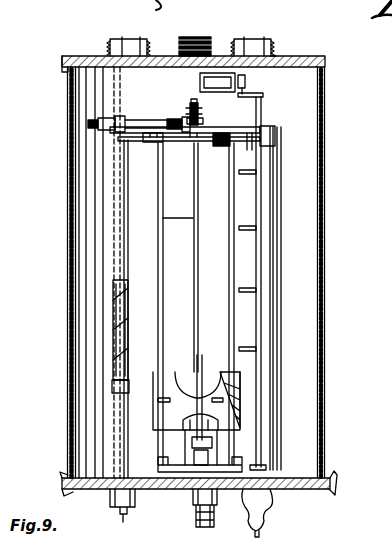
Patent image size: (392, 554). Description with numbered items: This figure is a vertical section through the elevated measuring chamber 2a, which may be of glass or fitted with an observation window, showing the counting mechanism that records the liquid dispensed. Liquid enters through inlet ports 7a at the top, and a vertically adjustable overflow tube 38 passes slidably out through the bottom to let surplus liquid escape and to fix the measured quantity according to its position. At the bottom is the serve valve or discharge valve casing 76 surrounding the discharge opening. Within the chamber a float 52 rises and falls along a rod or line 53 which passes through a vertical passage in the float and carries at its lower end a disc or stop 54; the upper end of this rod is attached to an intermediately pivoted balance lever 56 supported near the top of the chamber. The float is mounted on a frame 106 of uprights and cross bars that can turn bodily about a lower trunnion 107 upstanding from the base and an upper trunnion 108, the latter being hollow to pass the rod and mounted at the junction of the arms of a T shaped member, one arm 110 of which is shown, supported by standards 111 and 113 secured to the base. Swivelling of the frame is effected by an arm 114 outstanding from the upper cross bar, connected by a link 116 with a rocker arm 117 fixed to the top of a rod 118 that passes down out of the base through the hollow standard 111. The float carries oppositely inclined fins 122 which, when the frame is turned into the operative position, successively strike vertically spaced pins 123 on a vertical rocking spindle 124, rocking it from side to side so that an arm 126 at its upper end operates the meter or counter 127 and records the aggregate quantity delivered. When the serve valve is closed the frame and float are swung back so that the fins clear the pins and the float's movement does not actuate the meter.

The inlet ports 7a is at (128, 37).
The meter or counter 127 is at (273, 56).
The arm 126 is at (248, 80).
The arm of T shaped member 110 is at (232, 128).
The vertical rocking spindle 124 is at (259, 148).
The pins 123 is at (253, 223).
The standard 113 is at (276, 245).
The measuring chamber 2a is at (322, 293).
The fins or projections 122 is at (250, 406).
The lower trunnion 107 is at (200, 463).
The serve valve or discharge valve casing 76 is at (268, 510).
The overflow tube 38 is at (215, 520).
The rod 118 is at (120, 273).
The disc or stop 54 is at (183, 470).
The float 52 is at (181, 372).
The rod or line 53 is at (193, 285).
The frame 106 is at (213, 140).
The upper trunnion 108 is at (157, 143).
The standard 111 is at (123, 232).
The rocker arm 117 is at (103, 118).
The link 116 is at (138, 118).
The arm 114 is at (183, 117).
The balance lever 56 is at (194, 104).